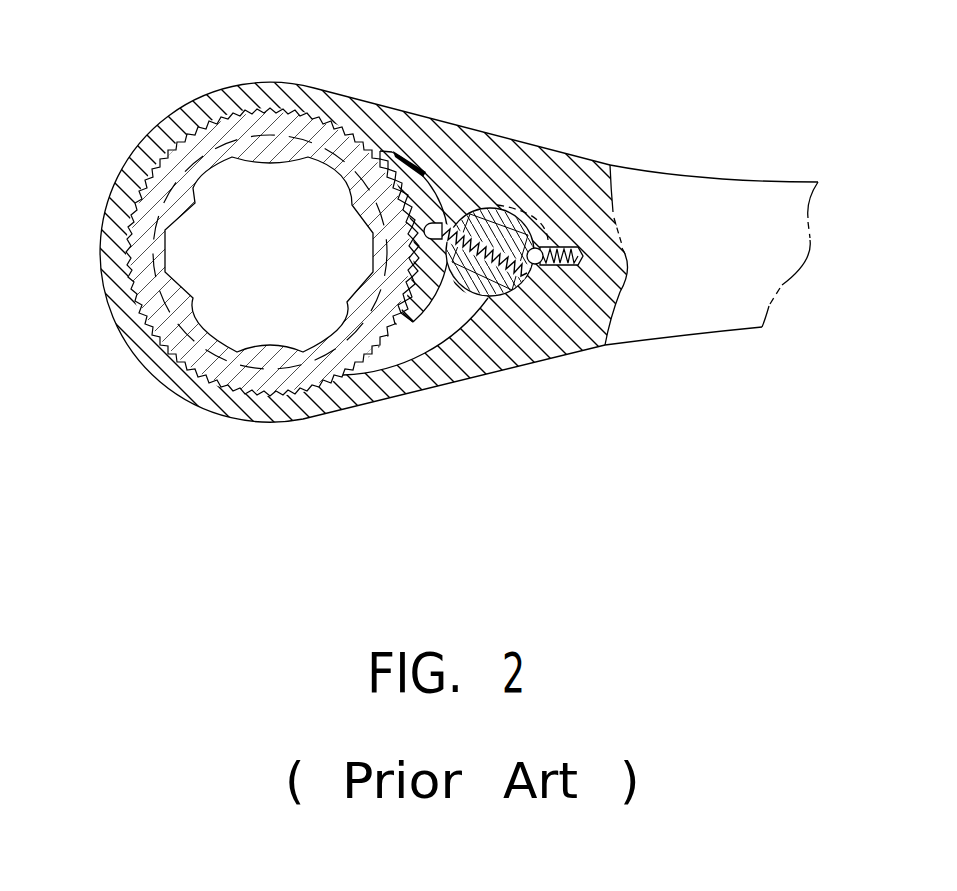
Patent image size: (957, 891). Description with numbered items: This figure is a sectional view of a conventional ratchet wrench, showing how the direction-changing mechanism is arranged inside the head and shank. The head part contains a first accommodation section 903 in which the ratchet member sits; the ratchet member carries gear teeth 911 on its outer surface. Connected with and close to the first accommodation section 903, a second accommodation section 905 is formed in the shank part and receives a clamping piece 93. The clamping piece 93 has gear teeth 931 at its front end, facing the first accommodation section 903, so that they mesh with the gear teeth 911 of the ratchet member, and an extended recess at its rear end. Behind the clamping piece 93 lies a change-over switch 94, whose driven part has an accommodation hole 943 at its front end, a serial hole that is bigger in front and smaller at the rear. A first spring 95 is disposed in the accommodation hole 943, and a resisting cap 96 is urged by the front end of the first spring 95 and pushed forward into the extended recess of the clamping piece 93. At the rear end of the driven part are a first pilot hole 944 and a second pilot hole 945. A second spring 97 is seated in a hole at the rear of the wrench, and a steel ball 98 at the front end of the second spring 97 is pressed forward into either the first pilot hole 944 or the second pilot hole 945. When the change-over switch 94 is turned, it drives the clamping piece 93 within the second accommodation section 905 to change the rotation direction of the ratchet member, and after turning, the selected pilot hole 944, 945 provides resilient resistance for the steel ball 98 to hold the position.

The first accommodation section 903 is at (262, 315).
The gear teeth 931 is at (357, 152).
The clamping piece 93 is at (385, 165).
The gear teeth 911 is at (402, 348).
The second accommodation section 905 is at (415, 345).
The first spring 95 is at (488, 208).
The change-over switch 94 is at (485, 293).
The first pilot hole 944 is at (515, 293).
The second pilot hole 945 is at (518, 215).
The accommodation hole 943 is at (475, 230).
The resisting cap 96 is at (431, 220).
The second spring 97 is at (581, 246).
The steel ball 98 is at (539, 245).